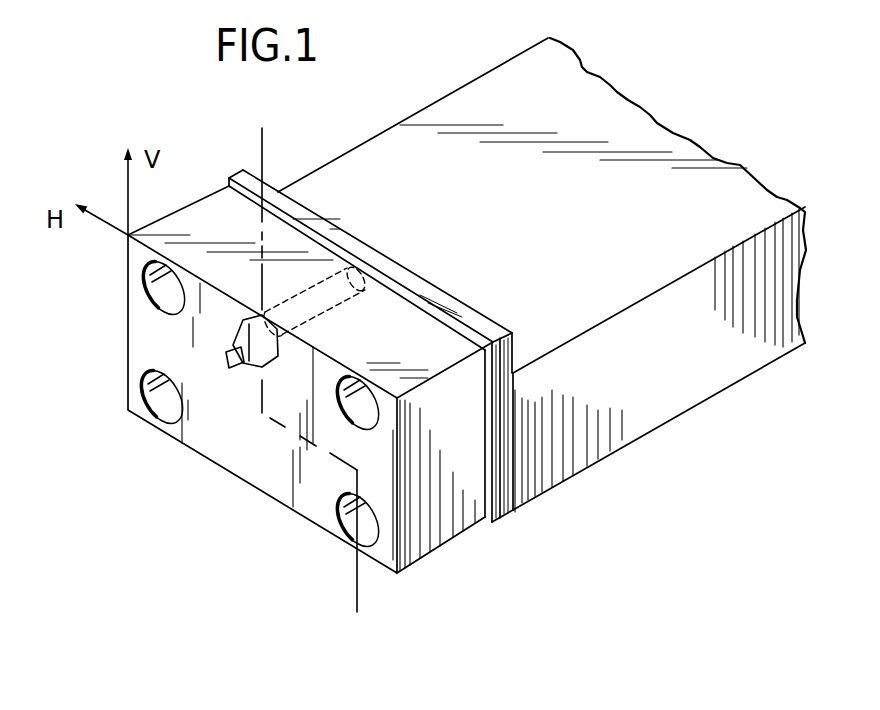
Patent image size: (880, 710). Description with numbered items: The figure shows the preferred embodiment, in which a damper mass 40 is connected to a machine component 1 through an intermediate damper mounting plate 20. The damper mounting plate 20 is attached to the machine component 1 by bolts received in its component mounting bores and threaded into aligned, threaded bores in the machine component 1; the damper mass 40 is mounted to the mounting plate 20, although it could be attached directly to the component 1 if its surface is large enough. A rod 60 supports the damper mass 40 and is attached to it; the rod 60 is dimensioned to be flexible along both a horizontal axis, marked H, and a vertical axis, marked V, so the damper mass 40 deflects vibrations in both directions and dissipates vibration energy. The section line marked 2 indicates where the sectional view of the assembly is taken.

The machine component 1 is at (486, 80).
The damper mounting plate 20 is at (333, 222).
The damper mass 40 is at (148, 330).
The rod 60 is at (334, 317).
The section line 2- 2 is at (283, 140).